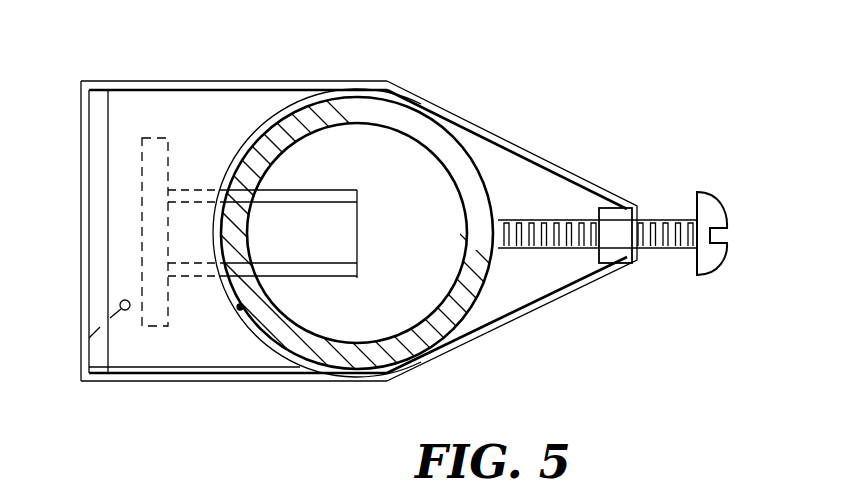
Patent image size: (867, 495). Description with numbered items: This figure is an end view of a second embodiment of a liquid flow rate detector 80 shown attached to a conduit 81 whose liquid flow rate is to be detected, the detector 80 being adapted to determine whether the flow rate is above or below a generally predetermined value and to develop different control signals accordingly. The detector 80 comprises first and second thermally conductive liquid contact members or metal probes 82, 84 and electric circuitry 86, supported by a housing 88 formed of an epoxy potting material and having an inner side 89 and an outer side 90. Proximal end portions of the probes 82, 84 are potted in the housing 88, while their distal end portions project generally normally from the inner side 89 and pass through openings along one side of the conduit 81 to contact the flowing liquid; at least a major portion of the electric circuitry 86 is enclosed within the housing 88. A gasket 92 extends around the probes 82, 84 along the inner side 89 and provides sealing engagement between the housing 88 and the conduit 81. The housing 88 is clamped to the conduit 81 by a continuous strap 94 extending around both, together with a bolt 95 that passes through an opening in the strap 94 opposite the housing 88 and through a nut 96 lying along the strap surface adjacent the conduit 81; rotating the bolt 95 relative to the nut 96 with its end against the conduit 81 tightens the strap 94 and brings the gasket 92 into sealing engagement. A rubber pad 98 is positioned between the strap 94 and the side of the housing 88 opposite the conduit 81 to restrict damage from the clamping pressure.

The liquid flow rate detector 80 is at (499, 104).
The conduit 81 is at (408, 351).
The first thermally conductive liquid contact member or metal probe 82 is at (342, 243).
The second thermally conductive liquid contact member or metal probe 84 is at (328, 190).
The electric circuitry 86 is at (142, 328).
The housing 88 is at (170, 355).
The inner side 89 is at (243, 312).
The outer side 90 is at (107, 198).
The gasket 92 is at (263, 113).
The continuous strap 94 is at (508, 141).
The bolt 95 is at (568, 250).
The nut 96 is at (613, 205).
The rubber pad 98 is at (96, 102).